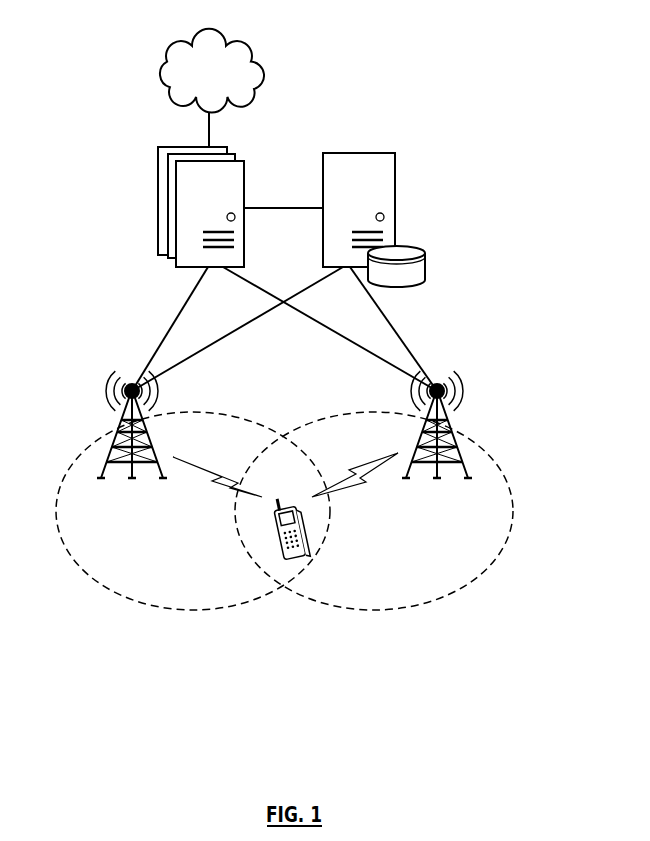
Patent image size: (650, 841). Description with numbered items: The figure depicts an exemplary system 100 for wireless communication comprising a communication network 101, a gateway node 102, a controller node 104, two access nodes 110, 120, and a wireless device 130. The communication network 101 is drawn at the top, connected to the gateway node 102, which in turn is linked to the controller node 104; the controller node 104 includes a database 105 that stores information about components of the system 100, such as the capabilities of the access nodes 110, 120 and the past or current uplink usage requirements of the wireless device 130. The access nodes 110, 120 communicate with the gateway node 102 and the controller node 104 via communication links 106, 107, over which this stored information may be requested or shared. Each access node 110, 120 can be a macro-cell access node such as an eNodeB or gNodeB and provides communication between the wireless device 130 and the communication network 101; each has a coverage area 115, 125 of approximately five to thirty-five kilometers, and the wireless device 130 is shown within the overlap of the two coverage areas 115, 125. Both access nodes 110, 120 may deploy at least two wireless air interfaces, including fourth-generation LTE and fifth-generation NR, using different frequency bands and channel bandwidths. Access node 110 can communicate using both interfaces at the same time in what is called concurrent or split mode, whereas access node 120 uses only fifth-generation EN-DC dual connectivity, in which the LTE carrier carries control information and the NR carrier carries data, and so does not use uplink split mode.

The system 100 is at (337, 54).
The communication network 101 is at (191, 85).
The gateway node 102 is at (158, 182).
The controller node 104 is at (396, 197).
The database 105 is at (425, 267).
The communication link 106 is at (265, 293).
The communication link 107 is at (235, 332).
The access node 110 is at (112, 448).
The coverage area 115 is at (123, 597).
The access node 120 is at (457, 452).
The coverage area 125 is at (450, 597).
The wireless device 130 is at (275, 547).